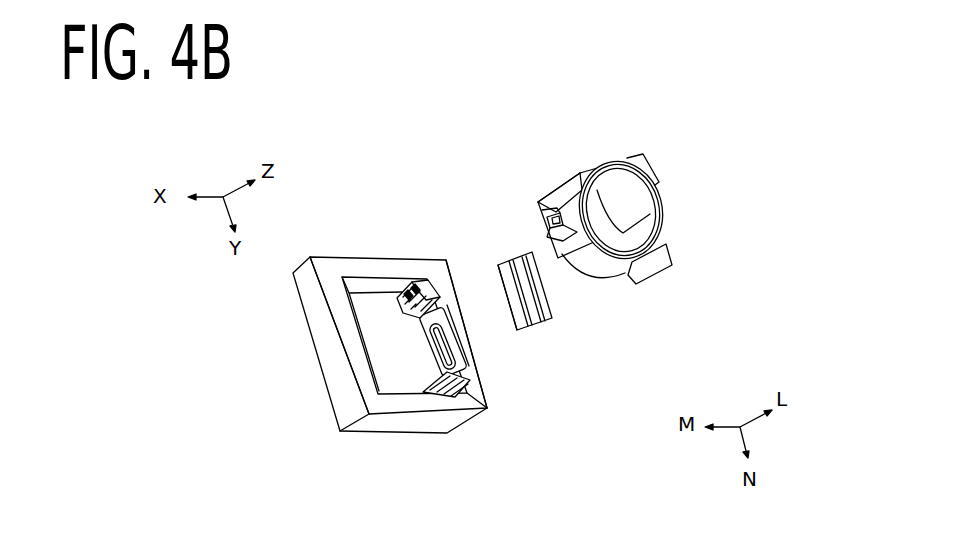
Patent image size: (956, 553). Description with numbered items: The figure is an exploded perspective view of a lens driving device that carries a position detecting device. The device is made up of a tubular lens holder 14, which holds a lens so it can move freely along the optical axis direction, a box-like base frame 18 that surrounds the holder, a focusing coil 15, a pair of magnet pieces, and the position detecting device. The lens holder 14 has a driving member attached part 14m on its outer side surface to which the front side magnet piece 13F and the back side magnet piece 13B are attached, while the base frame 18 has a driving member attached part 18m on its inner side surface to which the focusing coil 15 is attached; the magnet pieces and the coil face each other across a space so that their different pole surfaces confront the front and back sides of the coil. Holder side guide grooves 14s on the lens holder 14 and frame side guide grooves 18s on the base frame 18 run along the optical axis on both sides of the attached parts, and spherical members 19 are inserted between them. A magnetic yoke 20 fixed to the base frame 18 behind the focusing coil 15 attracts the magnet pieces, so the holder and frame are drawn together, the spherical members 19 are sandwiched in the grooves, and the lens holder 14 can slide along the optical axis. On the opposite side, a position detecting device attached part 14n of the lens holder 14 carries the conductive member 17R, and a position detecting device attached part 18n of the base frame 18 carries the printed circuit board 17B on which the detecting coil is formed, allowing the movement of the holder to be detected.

The back side magnet piece 13B is at (513, 333).
The front side magnet piece 13F is at (555, 313).
The lens holder 14 is at (605, 162).
The driving member attached part 14m is at (668, 227).
The position detecting device attached part 14n is at (552, 195).
The holder side guide grooves 14s is at (680, 248).
The focusing coil 15 is at (400, 319).
The printed circuit board 17B is at (543, 222).
The conductive member 17R is at (587, 257).
The base frame 18 is at (340, 397).
The driving member attached part 18m is at (462, 302).
The position detecting device attached part 18n is at (340, 327).
The frame side guide grooves 18s is at (470, 378).
The spherical members 19 is at (432, 390).
The magnetic yoke 20 is at (464, 322).